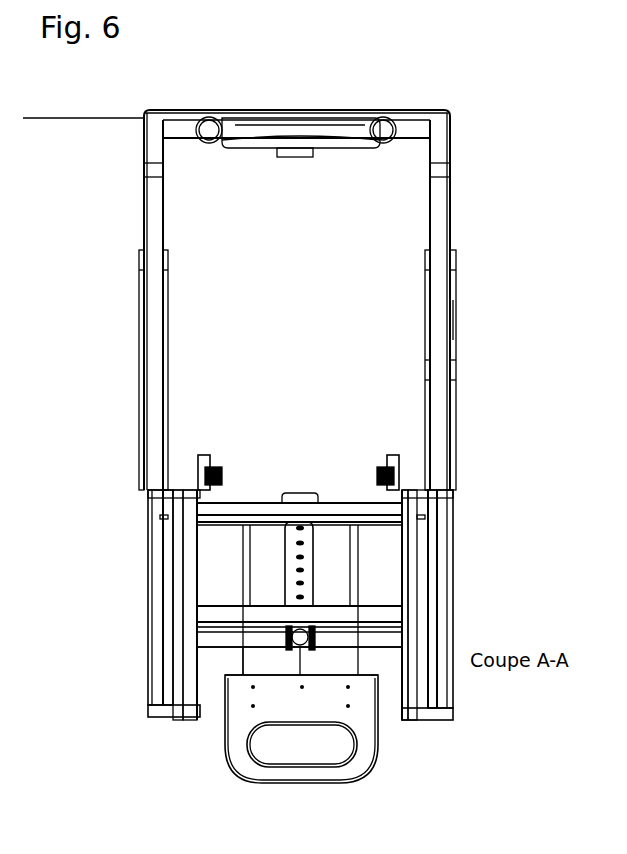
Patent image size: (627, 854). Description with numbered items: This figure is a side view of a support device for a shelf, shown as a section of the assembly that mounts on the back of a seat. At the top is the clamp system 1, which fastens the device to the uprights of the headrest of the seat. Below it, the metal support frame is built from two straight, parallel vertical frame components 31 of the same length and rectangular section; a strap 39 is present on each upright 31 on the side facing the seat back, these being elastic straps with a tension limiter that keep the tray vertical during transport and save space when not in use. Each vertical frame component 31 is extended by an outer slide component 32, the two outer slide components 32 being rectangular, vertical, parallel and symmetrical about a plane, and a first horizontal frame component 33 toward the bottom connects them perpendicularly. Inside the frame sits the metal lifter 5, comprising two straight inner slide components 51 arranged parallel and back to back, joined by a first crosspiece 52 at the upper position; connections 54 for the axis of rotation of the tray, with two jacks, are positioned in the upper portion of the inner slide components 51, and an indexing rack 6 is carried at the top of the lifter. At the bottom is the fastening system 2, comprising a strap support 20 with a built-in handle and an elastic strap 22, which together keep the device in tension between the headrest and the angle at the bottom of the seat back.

The clamp system 1 is at (301, 104).
The fastening system 2 is at (395, 752).
The lifter 5 is at (294, 407).
The indexing rack 6 is at (300, 492).
The strap support 20 is at (242, 700).
The elastic strap 22 is at (340, 573).
The vertical frame component 31 is at (150, 218).
The outer slide component 32 is at (160, 598).
The first horizontal frame component 33 is at (210, 640).
The strap 39 is at (455, 332).
The inner slide component 51 is at (178, 505).
The first crosspiece 52 is at (240, 510).
The connection 54 is at (210, 470).